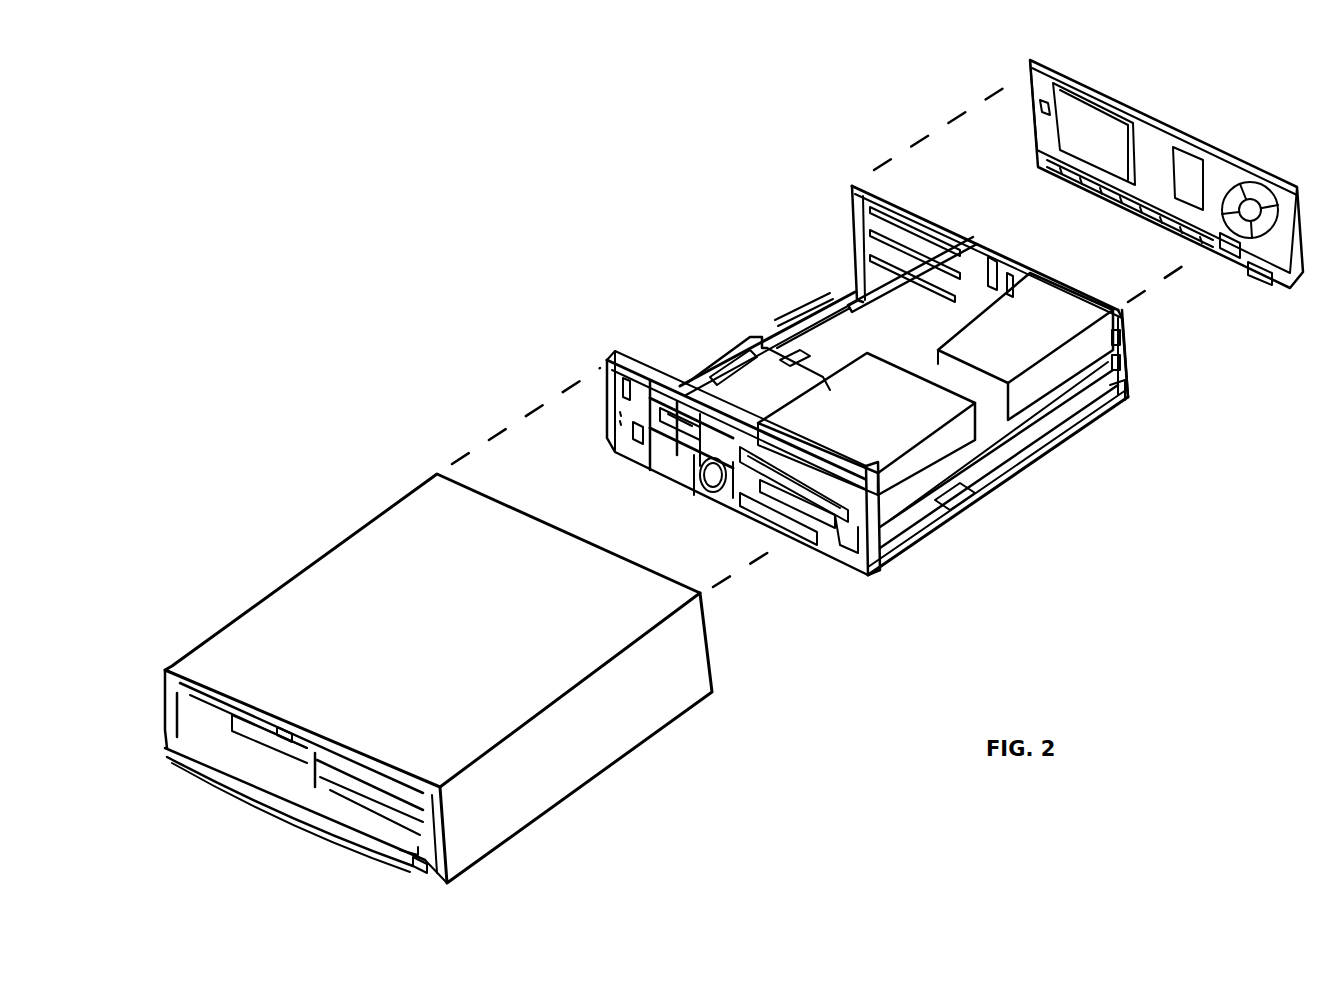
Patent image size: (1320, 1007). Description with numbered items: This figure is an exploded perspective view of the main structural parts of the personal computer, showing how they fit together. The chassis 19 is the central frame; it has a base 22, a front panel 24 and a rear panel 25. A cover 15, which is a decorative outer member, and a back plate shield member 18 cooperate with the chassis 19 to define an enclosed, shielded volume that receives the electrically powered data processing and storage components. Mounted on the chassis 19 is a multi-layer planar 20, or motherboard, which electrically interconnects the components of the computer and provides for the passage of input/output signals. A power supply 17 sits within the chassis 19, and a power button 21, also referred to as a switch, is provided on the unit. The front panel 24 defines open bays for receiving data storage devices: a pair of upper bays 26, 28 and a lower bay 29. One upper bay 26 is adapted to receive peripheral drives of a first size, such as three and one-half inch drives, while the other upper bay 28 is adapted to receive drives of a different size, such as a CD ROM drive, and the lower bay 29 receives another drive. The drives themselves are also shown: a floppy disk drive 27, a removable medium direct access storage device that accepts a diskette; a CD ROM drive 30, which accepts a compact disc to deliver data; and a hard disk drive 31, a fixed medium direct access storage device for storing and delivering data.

The cover 15 is at (438, 678).
The power supply 17 is at (1035, 320).
The back plate shield member 18 is at (1110, 93).
The chassis 19 is at (908, 195).
The planar 20 is at (828, 316).
The power button 21 is at (416, 868).
The base 22 is at (1015, 478).
The front panel 24 is at (614, 433).
The rear panel 25 is at (1123, 340).
The upper bay 26 is at (680, 483).
The floppy disk drive 27 is at (690, 418).
The upper bay 28 is at (887, 573).
The lower bay 29 is at (829, 546).
The CD ROM drive 30 is at (866, 424).
The hard disk drive 31 is at (958, 497).